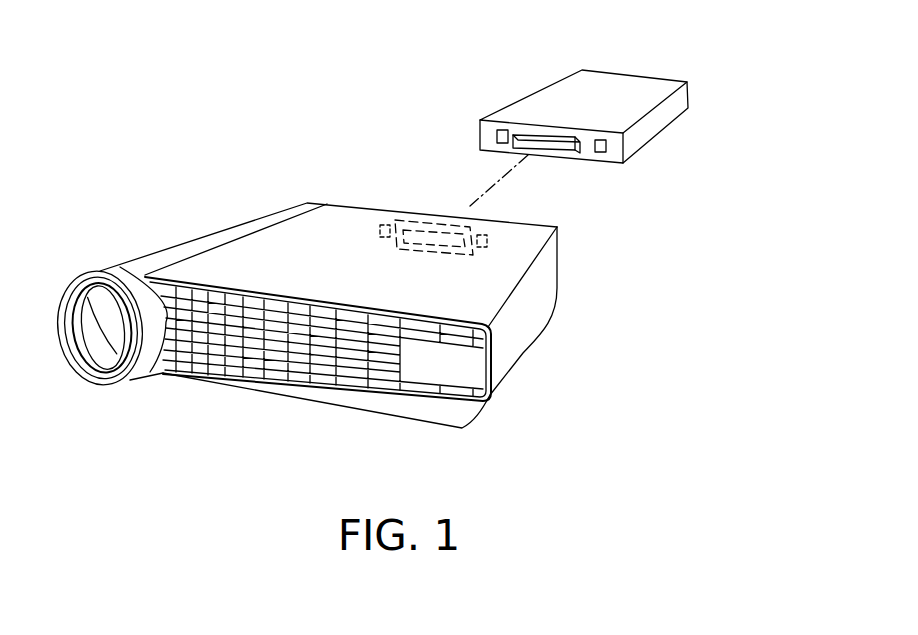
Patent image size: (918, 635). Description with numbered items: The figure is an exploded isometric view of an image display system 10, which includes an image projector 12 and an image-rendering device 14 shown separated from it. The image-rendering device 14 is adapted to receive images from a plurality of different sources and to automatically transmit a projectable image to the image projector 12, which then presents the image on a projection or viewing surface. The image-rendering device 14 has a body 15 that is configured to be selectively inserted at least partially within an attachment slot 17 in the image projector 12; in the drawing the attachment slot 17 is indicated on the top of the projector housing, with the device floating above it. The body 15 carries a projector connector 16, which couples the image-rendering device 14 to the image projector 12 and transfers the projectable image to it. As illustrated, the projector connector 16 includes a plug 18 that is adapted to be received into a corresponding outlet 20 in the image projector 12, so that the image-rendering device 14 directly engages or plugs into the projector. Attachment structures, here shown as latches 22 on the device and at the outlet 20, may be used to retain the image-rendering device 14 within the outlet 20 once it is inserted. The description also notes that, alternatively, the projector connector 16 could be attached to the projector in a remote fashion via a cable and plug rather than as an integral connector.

The image display system 10 is at (427, 121).
The image projector 12 is at (275, 232).
The image-rendering device 14 is at (646, 73).
The body 15 is at (613, 80).
The projector connector 16 is at (530, 125).
The attachment slot 17 is at (432, 214).
The plug 18 is at (570, 137).
The outlet 20 is at (420, 233).
The latches 22 is at (378, 228).